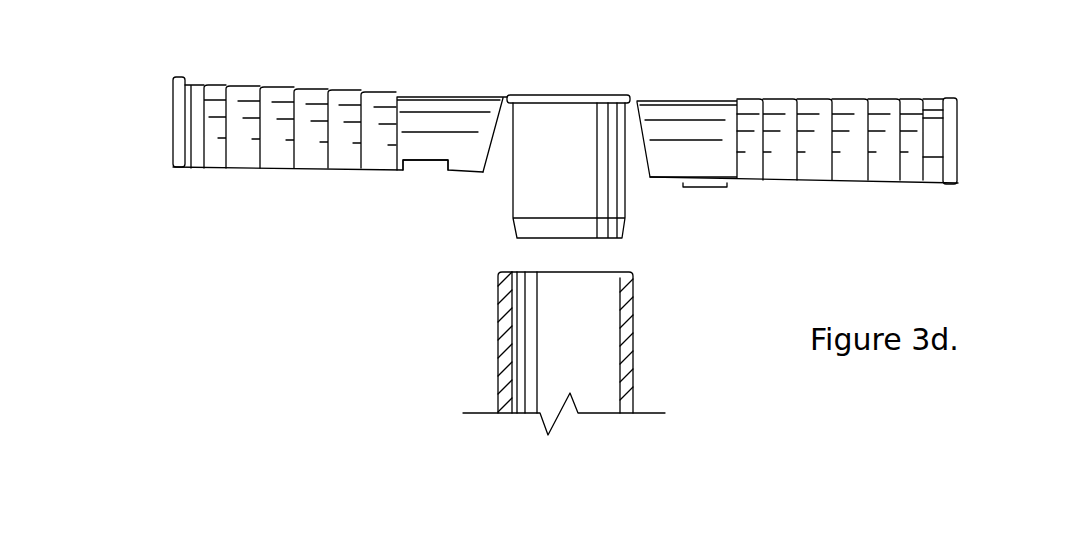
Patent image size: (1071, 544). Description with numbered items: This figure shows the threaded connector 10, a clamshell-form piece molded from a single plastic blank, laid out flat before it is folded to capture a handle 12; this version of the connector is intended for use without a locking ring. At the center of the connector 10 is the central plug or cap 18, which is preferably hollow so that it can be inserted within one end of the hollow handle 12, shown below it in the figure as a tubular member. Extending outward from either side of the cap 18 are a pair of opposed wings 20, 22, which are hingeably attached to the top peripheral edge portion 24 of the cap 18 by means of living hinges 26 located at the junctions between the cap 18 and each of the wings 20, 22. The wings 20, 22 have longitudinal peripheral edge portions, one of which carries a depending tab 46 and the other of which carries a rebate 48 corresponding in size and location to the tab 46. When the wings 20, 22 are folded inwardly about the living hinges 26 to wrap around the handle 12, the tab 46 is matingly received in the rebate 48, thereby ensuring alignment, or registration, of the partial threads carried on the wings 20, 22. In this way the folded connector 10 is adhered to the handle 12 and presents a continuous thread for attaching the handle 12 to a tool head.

The threaded connector 10 is at (290, 190).
The handle 12 is at (483, 353).
The central plug or cap 18 is at (527, 193).
The wing 20 is at (172, 127).
The wing 22 is at (918, 187).
The top peripheral edge portion 24 is at (613, 97).
The living hinges 26 is at (505, 97).
The depending tab 46 is at (705, 188).
The rebate 48 is at (423, 172).